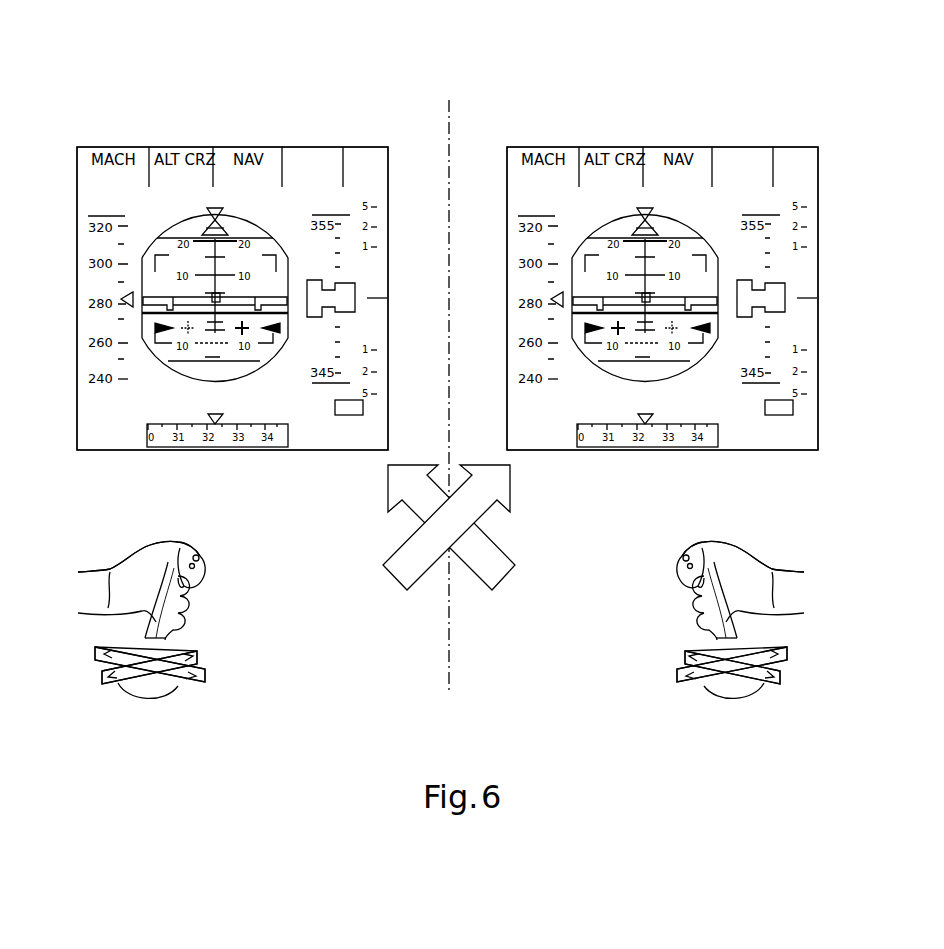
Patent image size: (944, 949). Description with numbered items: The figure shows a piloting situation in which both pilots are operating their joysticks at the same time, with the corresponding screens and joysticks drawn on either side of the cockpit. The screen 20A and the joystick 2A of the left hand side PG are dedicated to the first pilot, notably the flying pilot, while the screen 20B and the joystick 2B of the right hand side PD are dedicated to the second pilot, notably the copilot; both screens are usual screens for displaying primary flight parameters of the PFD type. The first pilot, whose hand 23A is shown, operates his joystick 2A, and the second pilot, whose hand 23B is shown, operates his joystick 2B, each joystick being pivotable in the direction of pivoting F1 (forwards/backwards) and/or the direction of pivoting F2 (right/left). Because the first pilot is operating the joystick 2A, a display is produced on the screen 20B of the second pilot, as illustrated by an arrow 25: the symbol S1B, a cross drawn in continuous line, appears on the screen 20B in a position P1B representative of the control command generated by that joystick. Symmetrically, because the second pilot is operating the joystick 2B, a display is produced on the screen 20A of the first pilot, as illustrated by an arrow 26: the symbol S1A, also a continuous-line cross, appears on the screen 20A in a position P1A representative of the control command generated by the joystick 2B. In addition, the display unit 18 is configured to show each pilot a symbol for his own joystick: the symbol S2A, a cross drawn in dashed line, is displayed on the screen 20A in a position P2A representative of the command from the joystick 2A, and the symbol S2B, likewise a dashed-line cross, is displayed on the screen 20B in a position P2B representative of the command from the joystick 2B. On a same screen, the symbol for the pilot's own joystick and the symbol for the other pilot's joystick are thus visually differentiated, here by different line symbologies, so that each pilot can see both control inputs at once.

The display unit 18 is at (456, 268).
The left hand side PG is at (235, 92).
The right hand side PD is at (637, 84).
The screen 20A is at (295, 452).
The screen 20B is at (725, 452).
The position P1A is at (173, 328).
The position P2A is at (155, 328).
The position P1B is at (585, 328).
The position P2B is at (603, 328).
The symbol S1A is at (244, 331).
The symbol S2A is at (187, 331).
The symbol S1B is at (617, 331).
The symbol S2B is at (674, 331).
The joystick 2A is at (210, 605).
The joystick 2B is at (667, 609).
The hand 23A is at (116, 572).
The hand 23B is at (783, 565).
The direction of pivoting F1 is at (130, 697).
The direction of pivoting F2 is at (204, 668).
The arrow 25 is at (475, 508).
The arrow 26 is at (470, 557).